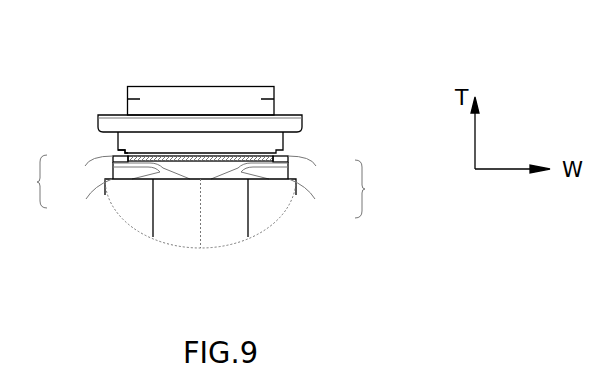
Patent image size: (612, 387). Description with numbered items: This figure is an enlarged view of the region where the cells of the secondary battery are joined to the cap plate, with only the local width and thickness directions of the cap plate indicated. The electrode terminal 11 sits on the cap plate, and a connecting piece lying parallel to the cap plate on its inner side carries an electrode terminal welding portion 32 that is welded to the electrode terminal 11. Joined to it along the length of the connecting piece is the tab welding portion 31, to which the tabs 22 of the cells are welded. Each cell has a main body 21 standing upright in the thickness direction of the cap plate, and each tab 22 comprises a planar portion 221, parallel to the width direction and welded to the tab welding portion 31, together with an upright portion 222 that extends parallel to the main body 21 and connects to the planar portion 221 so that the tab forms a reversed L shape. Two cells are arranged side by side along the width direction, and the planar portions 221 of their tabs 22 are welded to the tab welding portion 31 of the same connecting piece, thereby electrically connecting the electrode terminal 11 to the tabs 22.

The electrode terminal 11 is at (193, 147).
The main body 21 is at (133, 200).
The tab 22 is at (202, 186).
The planar portion 221 is at (115, 158).
The upright portion 222 is at (113, 183).
The tab welding portion 31 is at (183, 161).
The electrode terminal welding portion 32 is at (120, 150).